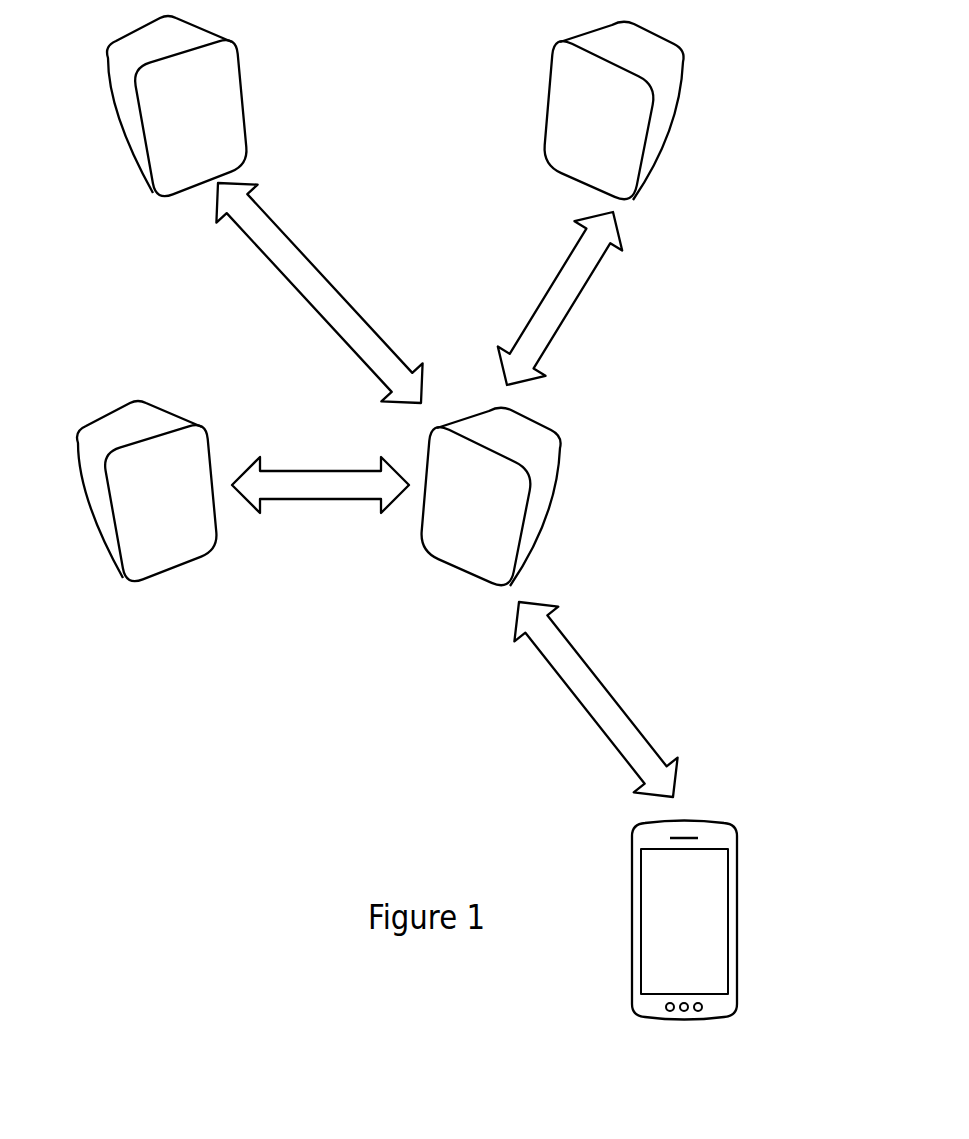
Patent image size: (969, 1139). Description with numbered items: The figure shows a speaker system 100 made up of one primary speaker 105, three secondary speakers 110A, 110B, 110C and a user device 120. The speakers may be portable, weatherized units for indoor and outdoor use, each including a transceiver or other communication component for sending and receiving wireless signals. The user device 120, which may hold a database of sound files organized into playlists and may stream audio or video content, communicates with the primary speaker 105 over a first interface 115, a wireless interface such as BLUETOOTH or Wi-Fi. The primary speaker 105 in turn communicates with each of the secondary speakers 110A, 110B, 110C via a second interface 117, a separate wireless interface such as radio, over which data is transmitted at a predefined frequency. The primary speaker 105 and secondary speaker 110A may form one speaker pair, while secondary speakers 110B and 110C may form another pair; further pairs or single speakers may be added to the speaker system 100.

The speaker system 100 is at (782, 177).
The primary speaker 105 is at (434, 550).
The secondary speaker 110A is at (97, 492).
The secondary speaker 110B is at (134, 133).
The secondary speaker 110C is at (668, 97).
The first interface 115 is at (571, 699).
The second interface 117 is at (298, 299).
The user device 120 is at (641, 838).